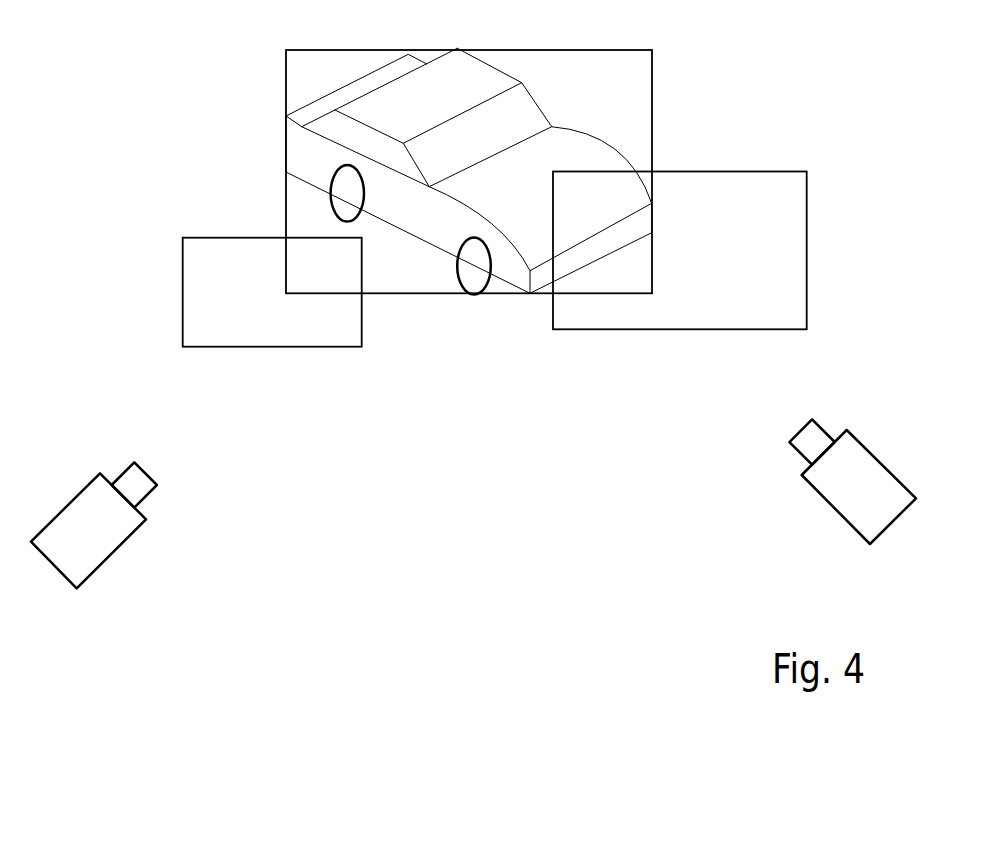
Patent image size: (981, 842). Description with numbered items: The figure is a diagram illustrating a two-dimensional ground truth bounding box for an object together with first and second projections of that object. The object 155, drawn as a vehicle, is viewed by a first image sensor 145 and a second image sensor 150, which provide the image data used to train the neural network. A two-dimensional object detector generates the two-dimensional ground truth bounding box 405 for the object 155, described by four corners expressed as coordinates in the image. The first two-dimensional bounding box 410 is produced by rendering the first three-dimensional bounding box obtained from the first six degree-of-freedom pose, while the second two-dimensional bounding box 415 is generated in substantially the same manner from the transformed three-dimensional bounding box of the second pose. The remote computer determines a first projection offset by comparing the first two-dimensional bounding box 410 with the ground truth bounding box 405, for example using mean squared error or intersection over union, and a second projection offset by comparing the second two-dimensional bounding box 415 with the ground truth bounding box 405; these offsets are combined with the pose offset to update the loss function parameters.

The object 155 is at (512, 77).
The 2D ground truth bounding box 405 is at (655, 77).
The first 2D bounding box 410 is at (704, 172).
The second 2D bounding box 415 is at (183, 237).
The second image sensor 150 is at (138, 528).
The first image sensor 145 is at (870, 448).